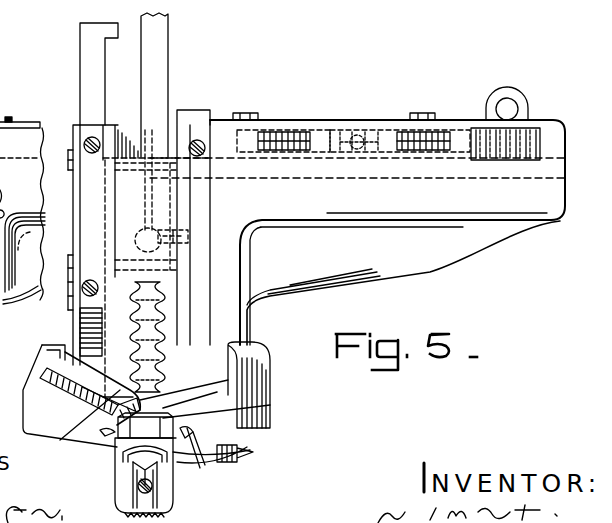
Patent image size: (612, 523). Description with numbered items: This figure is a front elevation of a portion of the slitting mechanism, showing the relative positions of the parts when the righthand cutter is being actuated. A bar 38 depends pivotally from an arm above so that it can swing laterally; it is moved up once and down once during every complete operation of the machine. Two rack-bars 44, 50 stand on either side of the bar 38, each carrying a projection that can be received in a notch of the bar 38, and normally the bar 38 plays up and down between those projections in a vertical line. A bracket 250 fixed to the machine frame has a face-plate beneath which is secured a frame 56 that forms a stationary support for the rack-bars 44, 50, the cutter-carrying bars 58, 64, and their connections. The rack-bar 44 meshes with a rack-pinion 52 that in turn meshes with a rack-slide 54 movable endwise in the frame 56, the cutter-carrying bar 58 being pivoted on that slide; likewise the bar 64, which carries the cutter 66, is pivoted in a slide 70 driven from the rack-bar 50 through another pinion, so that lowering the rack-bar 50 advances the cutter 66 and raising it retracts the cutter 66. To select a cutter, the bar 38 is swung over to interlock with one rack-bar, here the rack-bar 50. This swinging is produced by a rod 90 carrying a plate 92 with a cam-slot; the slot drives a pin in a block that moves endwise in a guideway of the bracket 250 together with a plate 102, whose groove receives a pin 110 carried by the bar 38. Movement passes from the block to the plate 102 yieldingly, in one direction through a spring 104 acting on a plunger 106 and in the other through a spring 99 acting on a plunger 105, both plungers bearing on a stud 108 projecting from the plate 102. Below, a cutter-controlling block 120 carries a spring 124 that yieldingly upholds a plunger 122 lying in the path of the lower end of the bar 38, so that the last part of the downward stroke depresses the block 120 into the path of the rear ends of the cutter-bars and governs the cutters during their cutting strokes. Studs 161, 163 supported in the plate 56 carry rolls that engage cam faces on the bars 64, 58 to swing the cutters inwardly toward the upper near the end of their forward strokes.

The bar 38 is at (168, 27).
The rack-bar 44 is at (80, 63).
The rack-bar 50 is at (203, 112).
The rack-pinion 52 is at (80, 320).
The rack-slide 54 is at (48, 367).
The frame 56 is at (238, 438).
The cutter-carrying bar 58 is at (76, 427).
The cutter-carrying bar 64 is at (215, 466).
The cutter 66 is at (177, 480).
The slide 70 is at (228, 395).
The rod 90 is at (511, 108).
The plate 92 is at (540, 148).
The spring 99 is at (300, 130).
The plate 102 is at (148, 135).
The spring 104 is at (141, 18).
The plunger 105 is at (335, 152).
The plunger 106 is at (375, 156).
The stud 108 is at (353, 134).
The pin 110 is at (247, 248).
The cutter-controlling block 120 is at (248, 400).
The plunger 122 is at (210, 320).
The spring 124 is at (103, 425).
The stud 161 is at (200, 468).
The stud 163 is at (108, 440).
The bracket 250 is at (334, 257).